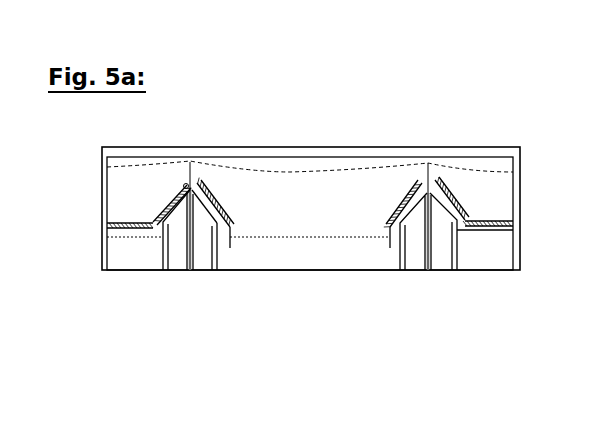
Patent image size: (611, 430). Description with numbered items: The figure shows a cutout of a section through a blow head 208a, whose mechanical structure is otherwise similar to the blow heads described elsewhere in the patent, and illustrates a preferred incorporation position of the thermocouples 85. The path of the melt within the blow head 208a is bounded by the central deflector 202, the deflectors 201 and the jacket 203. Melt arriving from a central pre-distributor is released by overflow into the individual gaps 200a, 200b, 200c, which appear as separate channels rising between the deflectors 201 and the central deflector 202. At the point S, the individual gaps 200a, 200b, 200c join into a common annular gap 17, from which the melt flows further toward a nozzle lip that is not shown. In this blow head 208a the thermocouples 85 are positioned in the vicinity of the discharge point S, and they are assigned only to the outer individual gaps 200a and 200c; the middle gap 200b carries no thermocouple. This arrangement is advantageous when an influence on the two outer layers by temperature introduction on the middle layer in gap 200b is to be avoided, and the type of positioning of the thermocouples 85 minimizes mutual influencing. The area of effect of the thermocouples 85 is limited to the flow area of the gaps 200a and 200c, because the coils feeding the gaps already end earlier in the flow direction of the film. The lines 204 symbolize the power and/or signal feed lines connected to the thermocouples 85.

The common annular gap 17 is at (190, 187).
The individual gap 200b is at (194, 212).
The thermocouple 85 is at (215, 202).
The blow head 208a is at (458, 125).
The line 204 is at (495, 223).
The point S is at (185, 185).
The individual gap 200a is at (163, 235).
The deflector 201 is at (210, 253).
The individual gap 200c is at (218, 237).
The central deflector 202 is at (290, 250).
The jacket 203 is at (497, 250).